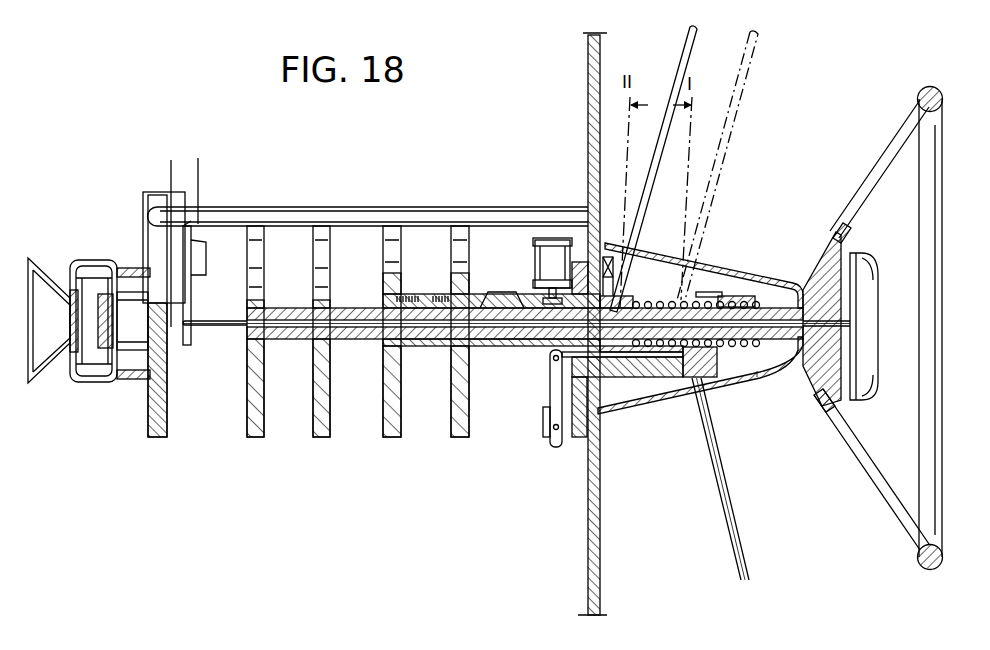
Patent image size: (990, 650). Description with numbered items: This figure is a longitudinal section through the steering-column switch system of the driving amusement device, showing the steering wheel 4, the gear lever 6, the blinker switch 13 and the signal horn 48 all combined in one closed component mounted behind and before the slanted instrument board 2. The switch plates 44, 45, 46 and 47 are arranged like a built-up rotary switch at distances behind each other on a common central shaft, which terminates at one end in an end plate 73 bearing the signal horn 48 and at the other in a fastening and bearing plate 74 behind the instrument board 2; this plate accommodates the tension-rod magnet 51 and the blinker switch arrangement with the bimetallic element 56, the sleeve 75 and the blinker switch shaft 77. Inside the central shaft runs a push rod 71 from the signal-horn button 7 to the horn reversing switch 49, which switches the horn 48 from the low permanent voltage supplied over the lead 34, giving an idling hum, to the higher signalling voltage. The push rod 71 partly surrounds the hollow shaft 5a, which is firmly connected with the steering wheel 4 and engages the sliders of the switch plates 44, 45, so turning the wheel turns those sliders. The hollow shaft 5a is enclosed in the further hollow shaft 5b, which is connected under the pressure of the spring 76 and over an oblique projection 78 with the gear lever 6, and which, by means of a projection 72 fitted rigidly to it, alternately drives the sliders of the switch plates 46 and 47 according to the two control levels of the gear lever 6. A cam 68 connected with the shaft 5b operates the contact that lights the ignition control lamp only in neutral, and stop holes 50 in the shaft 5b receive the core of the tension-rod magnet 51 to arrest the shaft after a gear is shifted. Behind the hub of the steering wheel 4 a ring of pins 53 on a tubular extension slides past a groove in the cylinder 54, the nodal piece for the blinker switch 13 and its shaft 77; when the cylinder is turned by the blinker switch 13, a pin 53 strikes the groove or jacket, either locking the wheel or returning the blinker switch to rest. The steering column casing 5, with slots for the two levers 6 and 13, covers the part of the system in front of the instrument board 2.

The instrument board 2 is at (600, 544).
The steering wheel 4 is at (943, 351).
The steering column casing 5 is at (777, 398).
The hollow shaft 5a is at (820, 397).
The hollow shaft 5b is at (437, 341).
The gear-shift lever 6 is at (688, 30).
The signal-horn button 7 is at (866, 350).
The blinker switch 13 is at (748, 549).
The lead 34 is at (200, 166).
The switch plate 44 is at (255, 208).
The switch plate 45 is at (323, 208).
The switch plate 46 is at (393, 208).
The switch plate 47 is at (461, 208).
The signal horn 48 is at (100, 262).
The horn switch 49 is at (171, 165).
The stop holes 50 is at (490, 292).
The tension-rod magnet 51 is at (551, 240).
The ring of pins 53 is at (708, 286).
The cylinder 54 is at (698, 379).
The bimetallic element 56 is at (549, 380).
The cam 68 is at (619, 252).
The push rod 71 is at (225, 327).
The projection 72 is at (417, 296).
The end plate 73 is at (162, 436).
The fastening and bearing plate 74 is at (581, 438).
The sleeve 75 is at (648, 378).
The spring 76 is at (753, 286).
The blinker switch shaft 77 is at (621, 379).
The oblique projection 78 is at (633, 292).